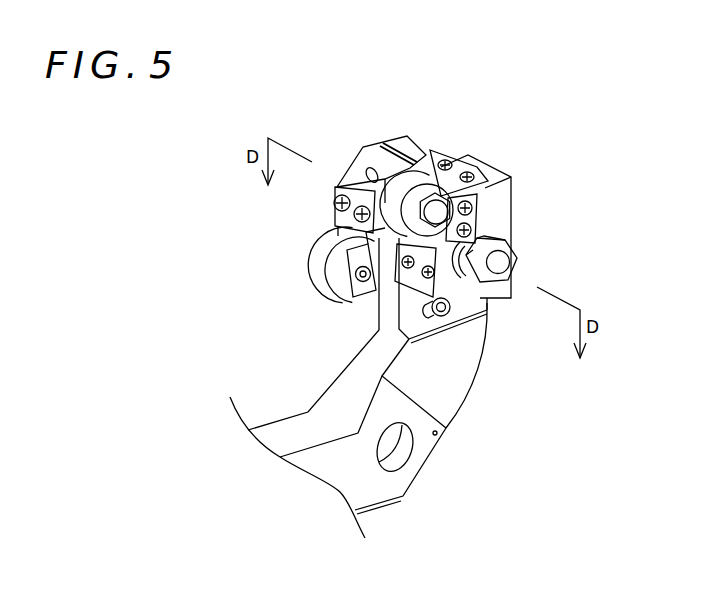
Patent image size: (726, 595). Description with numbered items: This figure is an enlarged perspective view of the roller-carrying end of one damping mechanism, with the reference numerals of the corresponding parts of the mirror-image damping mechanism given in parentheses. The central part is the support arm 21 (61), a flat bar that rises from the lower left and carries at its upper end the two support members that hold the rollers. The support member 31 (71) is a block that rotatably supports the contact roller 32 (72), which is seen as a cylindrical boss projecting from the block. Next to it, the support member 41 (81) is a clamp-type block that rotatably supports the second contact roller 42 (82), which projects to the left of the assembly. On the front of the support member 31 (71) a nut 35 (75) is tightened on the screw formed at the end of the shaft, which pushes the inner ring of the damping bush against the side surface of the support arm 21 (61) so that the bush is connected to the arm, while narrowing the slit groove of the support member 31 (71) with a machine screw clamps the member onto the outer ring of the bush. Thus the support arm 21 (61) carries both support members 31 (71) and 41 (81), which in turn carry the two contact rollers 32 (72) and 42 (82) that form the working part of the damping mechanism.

The support arm 21 is at (344, 388).
The support arm 61 is at (300, 422).
The support member 31 is at (502, 212).
The support member 71 is at (502, 176).
The contact roller 32 is at (456, 167).
The contact roller 72 is at (411, 179).
The support member 41 is at (420, 151).
The support member 81 is at (418, 145).
The nut 35 is at (540, 226).
The nut 75 is at (515, 250).
The contact roller 42 is at (282, 266).
The contact roller 82 is at (313, 265).